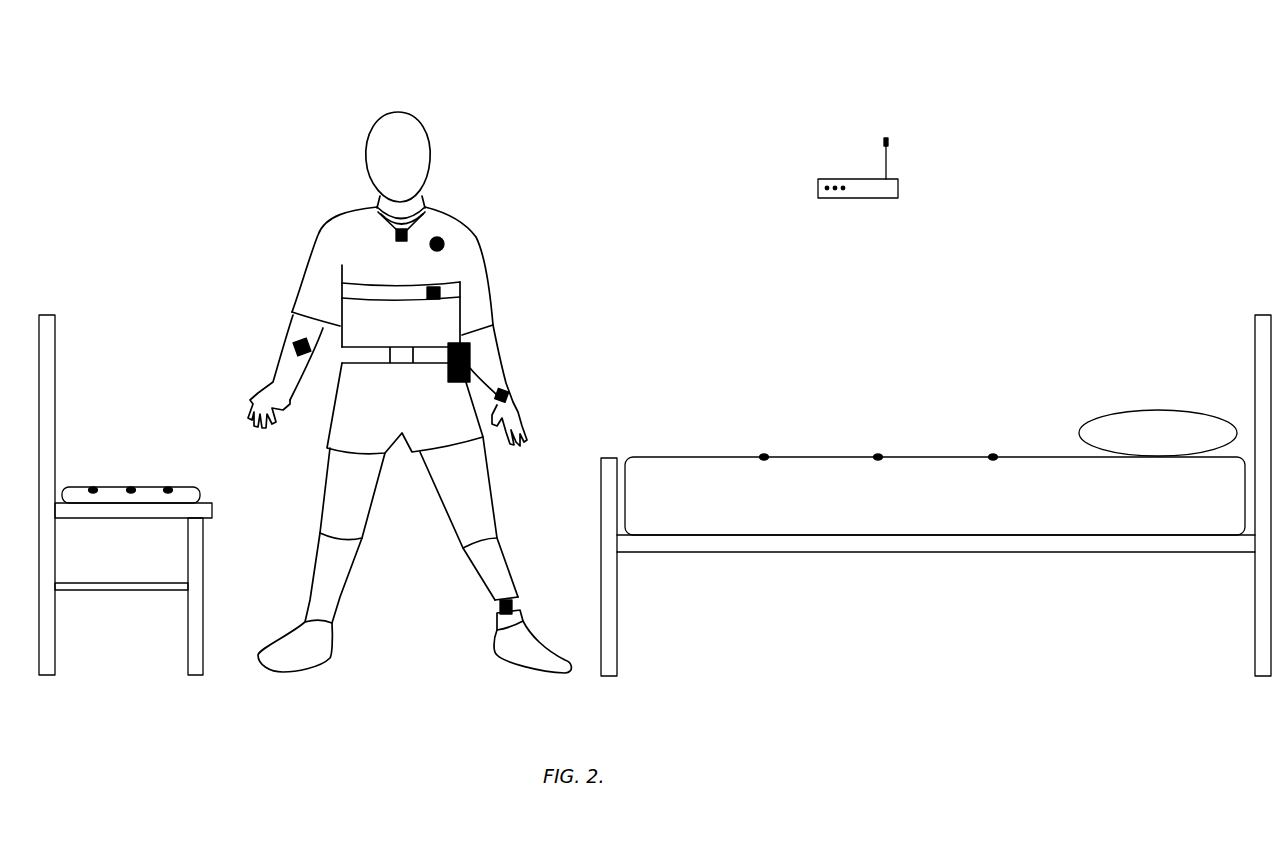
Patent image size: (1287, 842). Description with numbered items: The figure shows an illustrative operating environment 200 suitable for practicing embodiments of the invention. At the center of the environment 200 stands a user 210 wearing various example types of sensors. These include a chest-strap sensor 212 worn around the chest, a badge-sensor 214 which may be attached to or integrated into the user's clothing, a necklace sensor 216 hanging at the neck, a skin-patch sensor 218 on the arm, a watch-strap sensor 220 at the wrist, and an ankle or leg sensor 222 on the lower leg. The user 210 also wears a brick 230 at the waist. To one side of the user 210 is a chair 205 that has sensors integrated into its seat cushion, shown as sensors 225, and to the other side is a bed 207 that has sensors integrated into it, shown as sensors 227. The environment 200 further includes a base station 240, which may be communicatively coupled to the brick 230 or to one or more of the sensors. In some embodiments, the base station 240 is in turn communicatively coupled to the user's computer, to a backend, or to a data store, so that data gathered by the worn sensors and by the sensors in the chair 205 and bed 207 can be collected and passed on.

The operating environment 200 is at (216, 76).
The chair 205 is at (56, 366).
The bed 207 is at (1255, 346).
The user 210 is at (398, 112).
The chest-strap sensor 212 is at (433, 299).
The badge-sensor 214 is at (437, 237).
The necklace sensor 216 is at (402, 241).
The skin-patch sensor 218 is at (308, 352).
The watch-strap sensor 220 is at (509, 397).
The ankle or leg sensor 222 is at (518, 604).
The sensors 225 is at (93, 487).
The sensors 227 is at (764, 455).
The brick 230 is at (470, 368).
The base station 240 is at (849, 178).